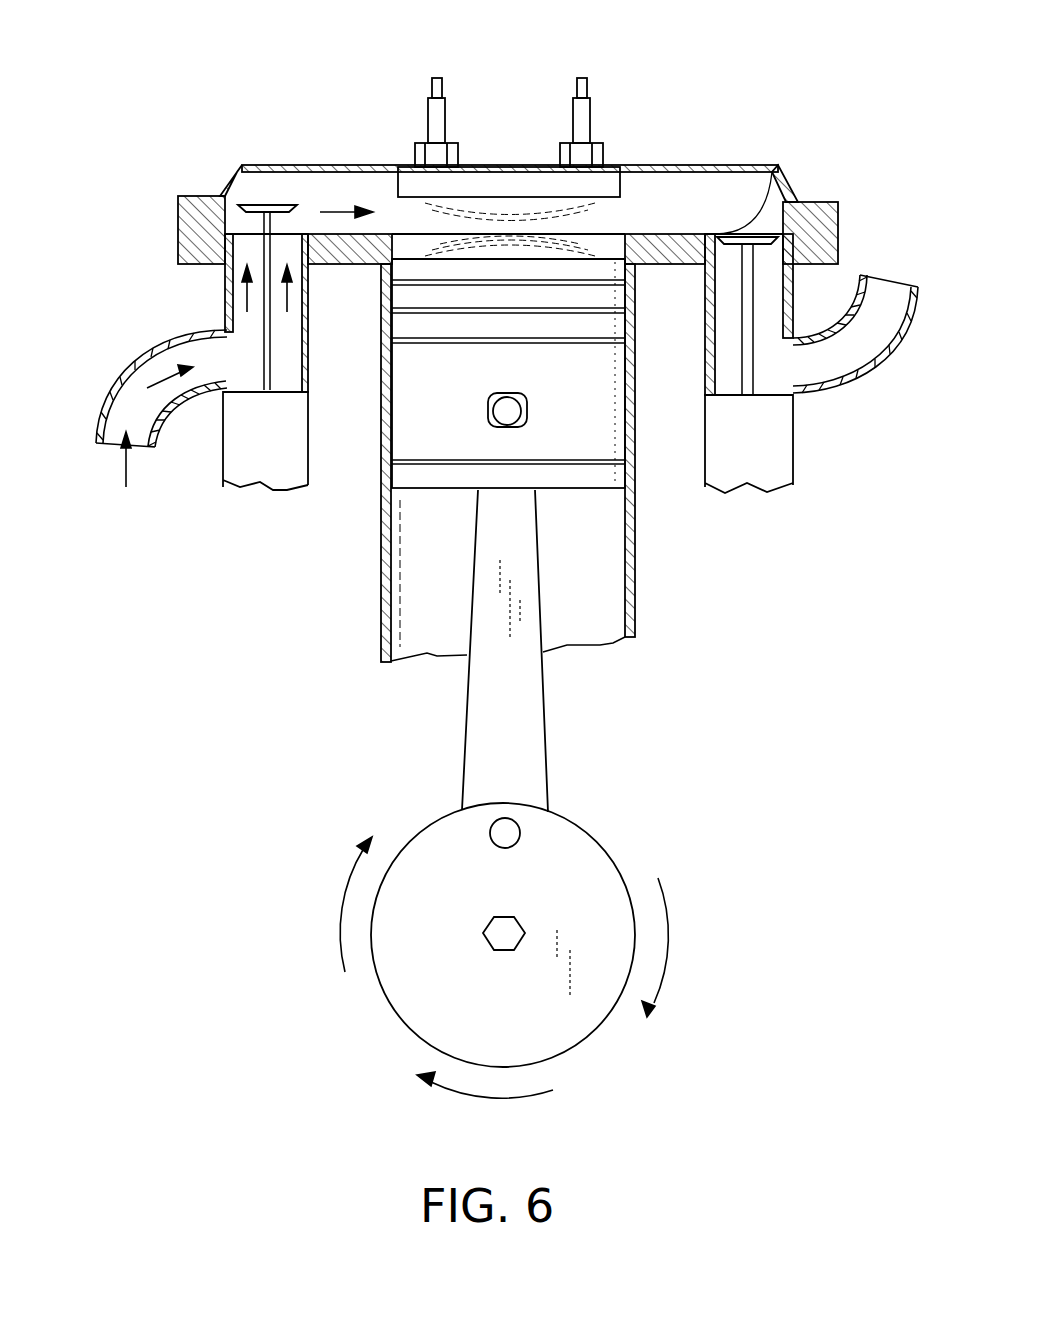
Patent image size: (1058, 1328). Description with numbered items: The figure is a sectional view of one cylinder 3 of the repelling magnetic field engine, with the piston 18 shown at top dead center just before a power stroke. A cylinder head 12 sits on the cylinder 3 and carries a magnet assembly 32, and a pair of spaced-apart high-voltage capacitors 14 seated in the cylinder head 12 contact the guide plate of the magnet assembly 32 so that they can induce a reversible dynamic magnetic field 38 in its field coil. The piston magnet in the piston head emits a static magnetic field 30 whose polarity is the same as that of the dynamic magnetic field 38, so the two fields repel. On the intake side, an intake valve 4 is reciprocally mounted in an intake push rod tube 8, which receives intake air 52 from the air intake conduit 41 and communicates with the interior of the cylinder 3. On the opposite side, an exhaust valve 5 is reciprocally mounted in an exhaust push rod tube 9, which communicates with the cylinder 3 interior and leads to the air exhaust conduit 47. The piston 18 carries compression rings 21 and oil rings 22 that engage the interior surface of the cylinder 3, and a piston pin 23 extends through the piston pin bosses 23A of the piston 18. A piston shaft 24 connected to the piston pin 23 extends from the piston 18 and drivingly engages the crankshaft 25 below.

The cylinder 3 is at (381, 582).
The intake valve 4 is at (266, 205).
The exhaust valve 5 is at (781, 192).
The intake push rod tube 8 is at (225, 291).
The exhaust push rod tube 9 is at (792, 300).
The cylinder head 12 is at (748, 168).
The high-voltage capacitors 14 is at (573, 117).
The piston 18 is at (407, 422).
The compression rings 21 is at (600, 312).
The oil rings 22 is at (427, 343).
The piston pin 23 is at (521, 411).
The piston pin bosses 23A is at (522, 427).
The piston shaft 24 is at (466, 745).
The crankshaft 25 is at (611, 850).
The static magnetic field 30 is at (427, 259).
The magnet assembly 32 is at (612, 162).
The dynamic magnetic field 38 is at (596, 224).
The air intake conduit 41 is at (186, 417).
The air exhaust conduit 47 is at (893, 348).
The intake air 52 is at (330, 210).